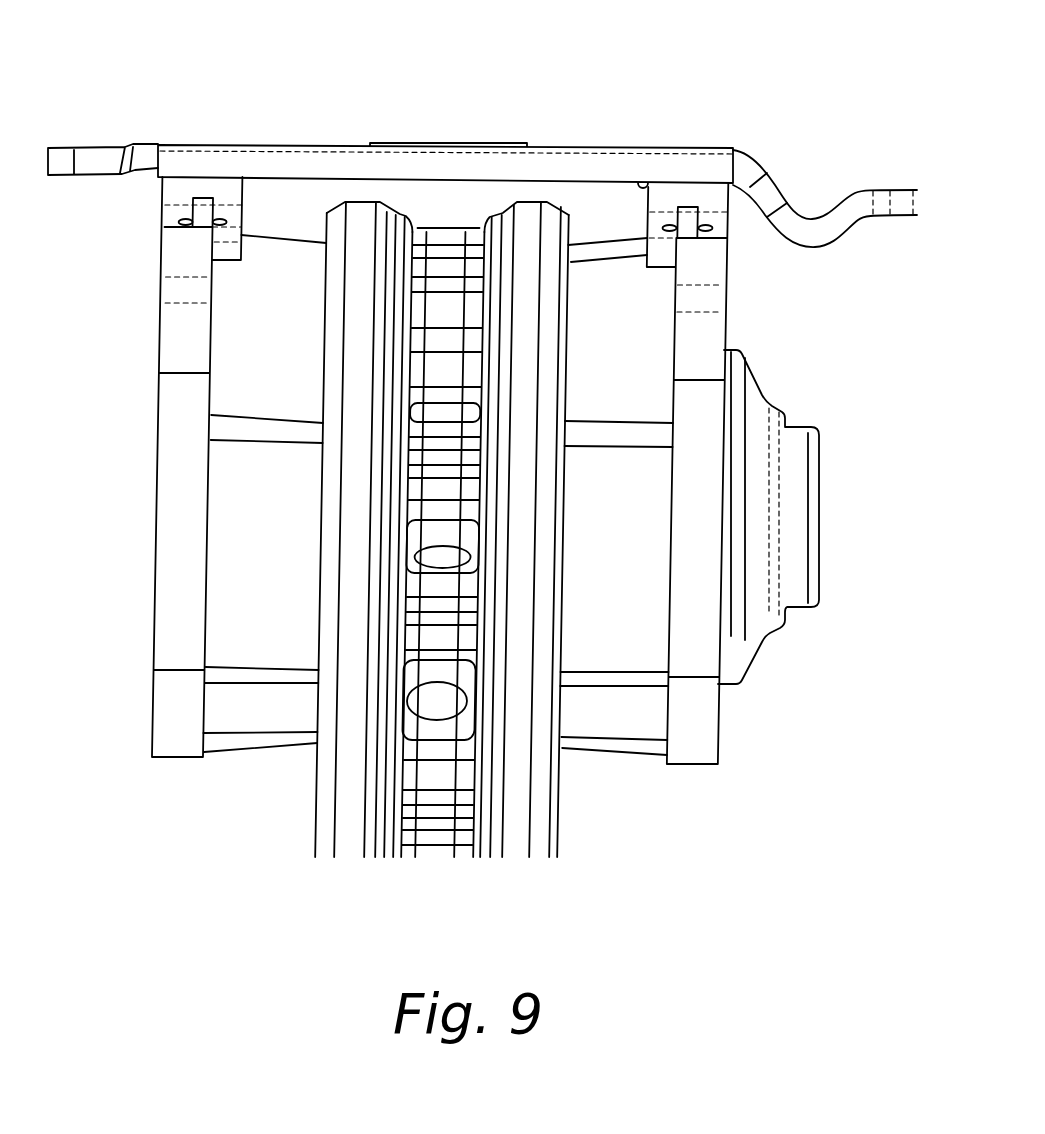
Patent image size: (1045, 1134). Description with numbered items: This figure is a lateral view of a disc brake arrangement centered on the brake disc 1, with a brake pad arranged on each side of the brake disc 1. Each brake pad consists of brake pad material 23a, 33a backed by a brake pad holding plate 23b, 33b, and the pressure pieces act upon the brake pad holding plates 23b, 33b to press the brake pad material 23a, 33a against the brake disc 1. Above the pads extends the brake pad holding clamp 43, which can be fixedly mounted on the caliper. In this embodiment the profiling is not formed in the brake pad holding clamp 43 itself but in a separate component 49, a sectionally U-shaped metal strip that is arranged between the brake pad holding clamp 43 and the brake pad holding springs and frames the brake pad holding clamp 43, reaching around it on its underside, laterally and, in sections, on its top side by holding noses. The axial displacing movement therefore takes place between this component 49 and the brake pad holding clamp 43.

The brake disc 1 is at (540, 812).
The brake pad material 23a is at (688, 738).
The brake pad holding plate 23b is at (603, 720).
The brake pad material 33a is at (178, 733).
The brake pad holding plate 33b is at (247, 725).
The brake pad holding clamp 43 is at (803, 222).
The component 49 is at (637, 162).